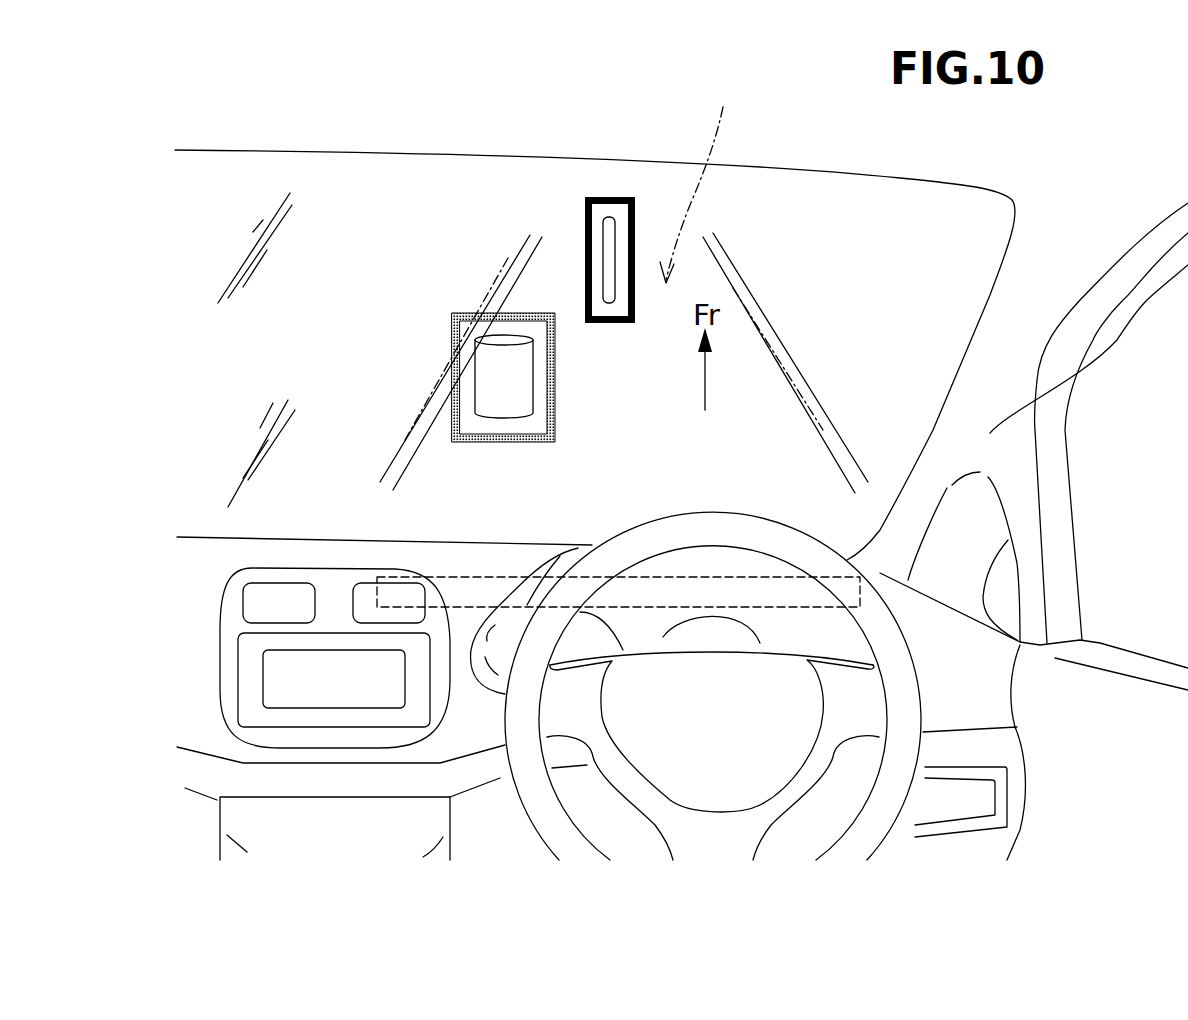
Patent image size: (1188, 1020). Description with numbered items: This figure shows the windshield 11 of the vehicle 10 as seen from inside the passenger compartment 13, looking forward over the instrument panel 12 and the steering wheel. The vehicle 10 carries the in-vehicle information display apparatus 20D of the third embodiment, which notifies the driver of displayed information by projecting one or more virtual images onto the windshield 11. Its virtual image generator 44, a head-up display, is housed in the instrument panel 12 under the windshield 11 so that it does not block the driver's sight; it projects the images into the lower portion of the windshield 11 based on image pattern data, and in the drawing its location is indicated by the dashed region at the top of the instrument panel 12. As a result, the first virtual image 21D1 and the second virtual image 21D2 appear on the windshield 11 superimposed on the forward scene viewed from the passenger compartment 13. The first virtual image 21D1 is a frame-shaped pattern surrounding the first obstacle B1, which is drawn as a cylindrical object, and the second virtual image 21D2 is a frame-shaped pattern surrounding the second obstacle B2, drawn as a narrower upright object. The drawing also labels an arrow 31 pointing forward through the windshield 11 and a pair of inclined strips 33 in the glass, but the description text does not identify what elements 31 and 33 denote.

The vehicle 10 is at (1103, 203).
The windshield 11 is at (213, 225).
The instrument panel 12 is at (211, 566).
The passenger compartment 13 is at (500, 920).
The in-vehicle information display apparatus 20D is at (362, 570).
The virtual image generator 44 is at (576, 526).
The first virtual image 21D1 is at (556, 422).
The second virtual image 21D2 is at (620, 196).
The first obstacle B1 is at (527, 372).
The second obstacle B2 is at (602, 247).
The projection direction line 31 is at (698, 175).
The boundary line 33 is at (508, 258).